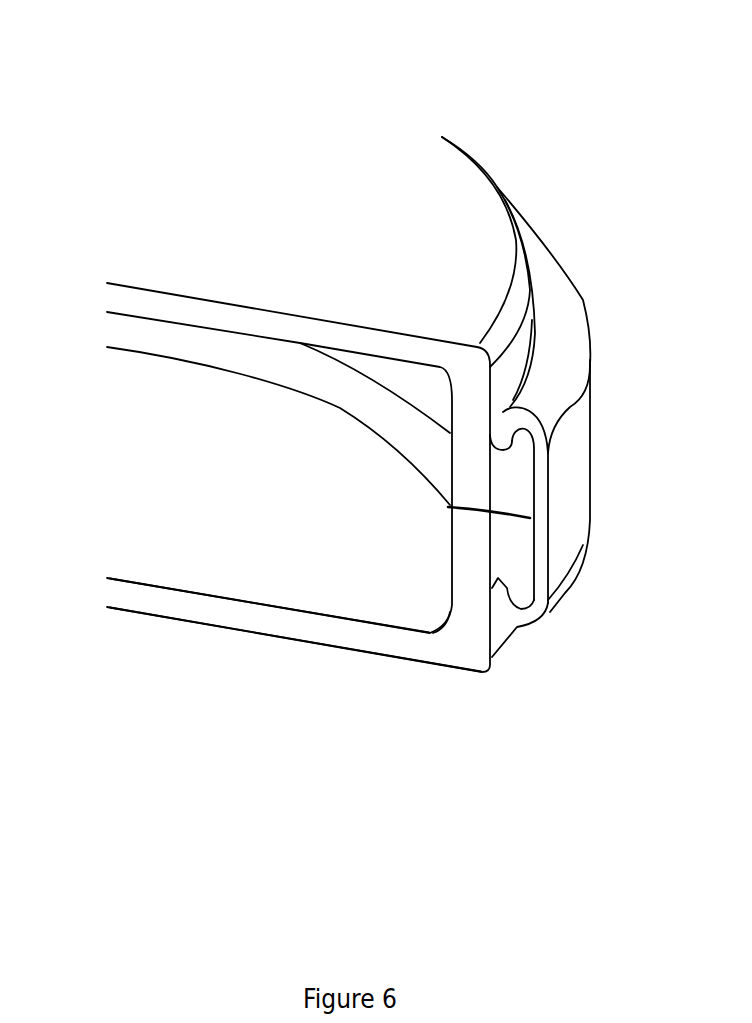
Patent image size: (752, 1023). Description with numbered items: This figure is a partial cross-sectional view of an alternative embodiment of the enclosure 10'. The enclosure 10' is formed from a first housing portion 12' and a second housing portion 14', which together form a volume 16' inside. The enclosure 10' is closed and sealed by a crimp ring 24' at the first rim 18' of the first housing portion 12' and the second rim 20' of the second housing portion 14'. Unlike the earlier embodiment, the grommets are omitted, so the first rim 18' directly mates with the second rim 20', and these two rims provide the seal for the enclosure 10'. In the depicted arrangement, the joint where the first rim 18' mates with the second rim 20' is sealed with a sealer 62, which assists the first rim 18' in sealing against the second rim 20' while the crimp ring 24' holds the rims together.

The enclosure 10' is at (298, 389).
The first housing portion 12' is at (454, 190).
The second housing portion 14' is at (295, 663).
The volume 16' is at (247, 472).
The first rim 18' is at (581, 505).
The second rim 20' is at (582, 508).
The crimp ring 24' is at (557, 295).
The sealer 62 is at (438, 512).